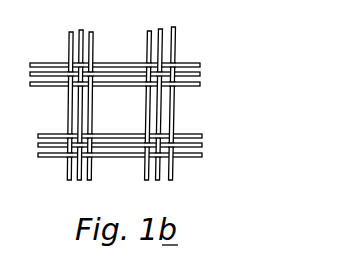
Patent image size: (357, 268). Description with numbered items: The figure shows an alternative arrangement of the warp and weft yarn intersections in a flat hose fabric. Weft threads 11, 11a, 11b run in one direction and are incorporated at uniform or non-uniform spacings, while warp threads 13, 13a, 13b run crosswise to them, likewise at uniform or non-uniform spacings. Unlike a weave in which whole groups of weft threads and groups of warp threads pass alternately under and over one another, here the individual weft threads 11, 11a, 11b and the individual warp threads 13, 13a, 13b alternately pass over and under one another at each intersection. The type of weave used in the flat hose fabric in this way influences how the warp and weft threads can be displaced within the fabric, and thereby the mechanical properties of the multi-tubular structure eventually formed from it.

The weft thread 11 is at (198, 158).
The weft thread 11a is at (250, 174).
The weft thread 11b is at (248, 124).
The warp thread 13 is at (80, 31).
The warp thread 13a is at (71, 43).
The warp thread 13b is at (142, 58).